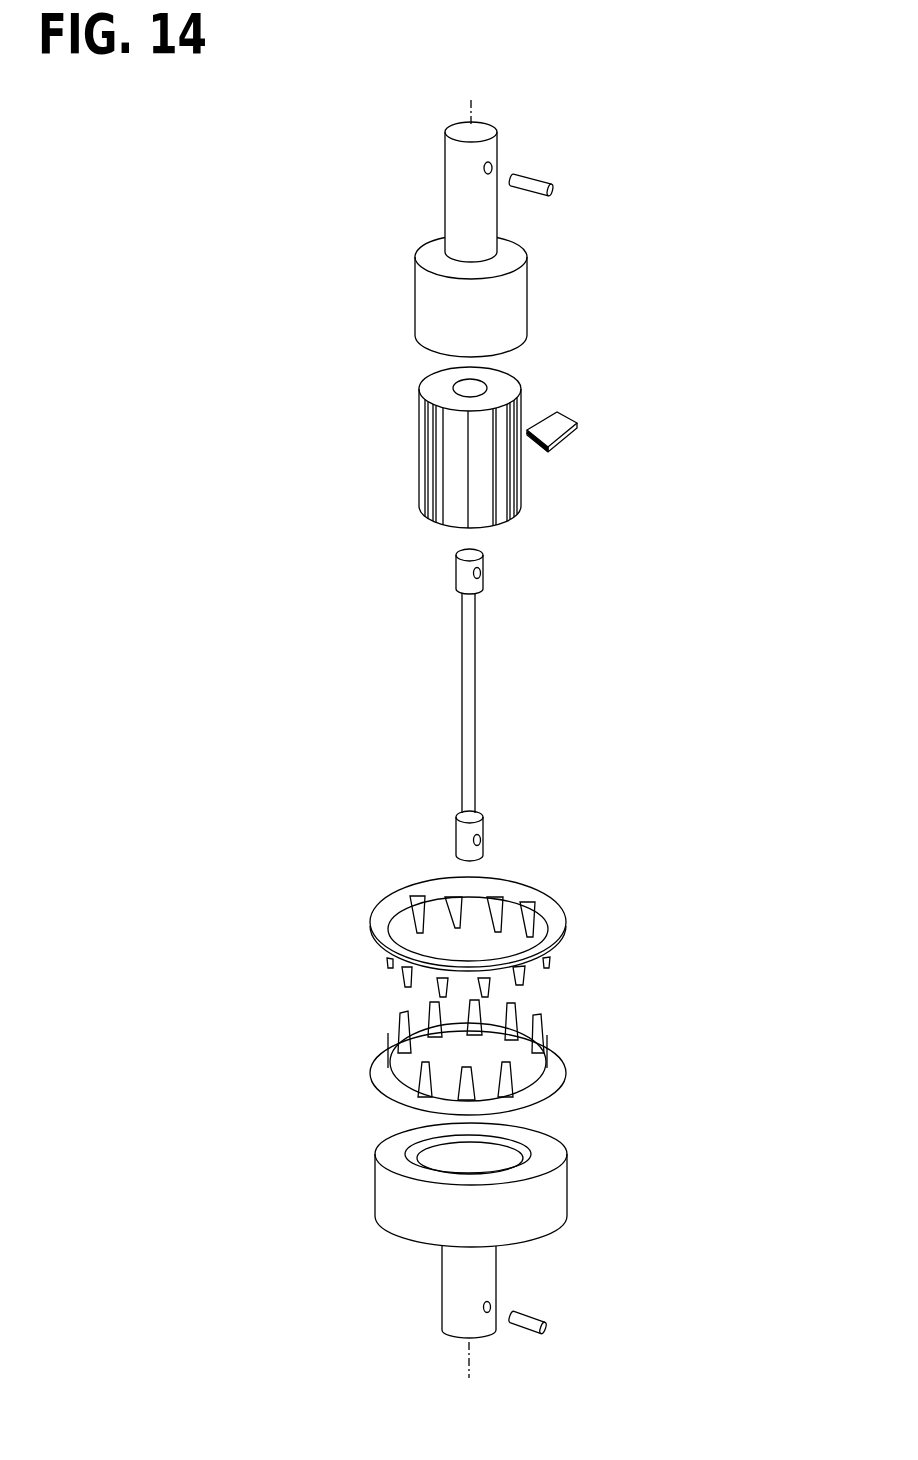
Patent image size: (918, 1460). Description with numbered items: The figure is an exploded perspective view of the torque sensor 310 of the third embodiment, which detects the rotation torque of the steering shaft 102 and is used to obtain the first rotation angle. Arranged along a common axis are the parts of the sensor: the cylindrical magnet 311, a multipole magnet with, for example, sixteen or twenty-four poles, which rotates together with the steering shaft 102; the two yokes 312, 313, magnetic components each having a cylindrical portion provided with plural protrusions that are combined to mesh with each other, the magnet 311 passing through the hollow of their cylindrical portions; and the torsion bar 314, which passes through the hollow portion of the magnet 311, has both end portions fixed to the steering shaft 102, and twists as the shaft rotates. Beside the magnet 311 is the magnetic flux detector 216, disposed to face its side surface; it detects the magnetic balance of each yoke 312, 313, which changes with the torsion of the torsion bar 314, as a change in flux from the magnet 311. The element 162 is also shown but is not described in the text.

The shaft 162 is at (445, 181).
The torque sensor 310 is at (493, 434).
The magnet 311 is at (419, 447).
The magnetic flux detector 216 is at (565, 430).
The torsion bar 314 is at (477, 707).
The yoke 312 is at (568, 920).
The yoke 313 is at (568, 1072).
The steering shaft 102 is at (442, 1310).